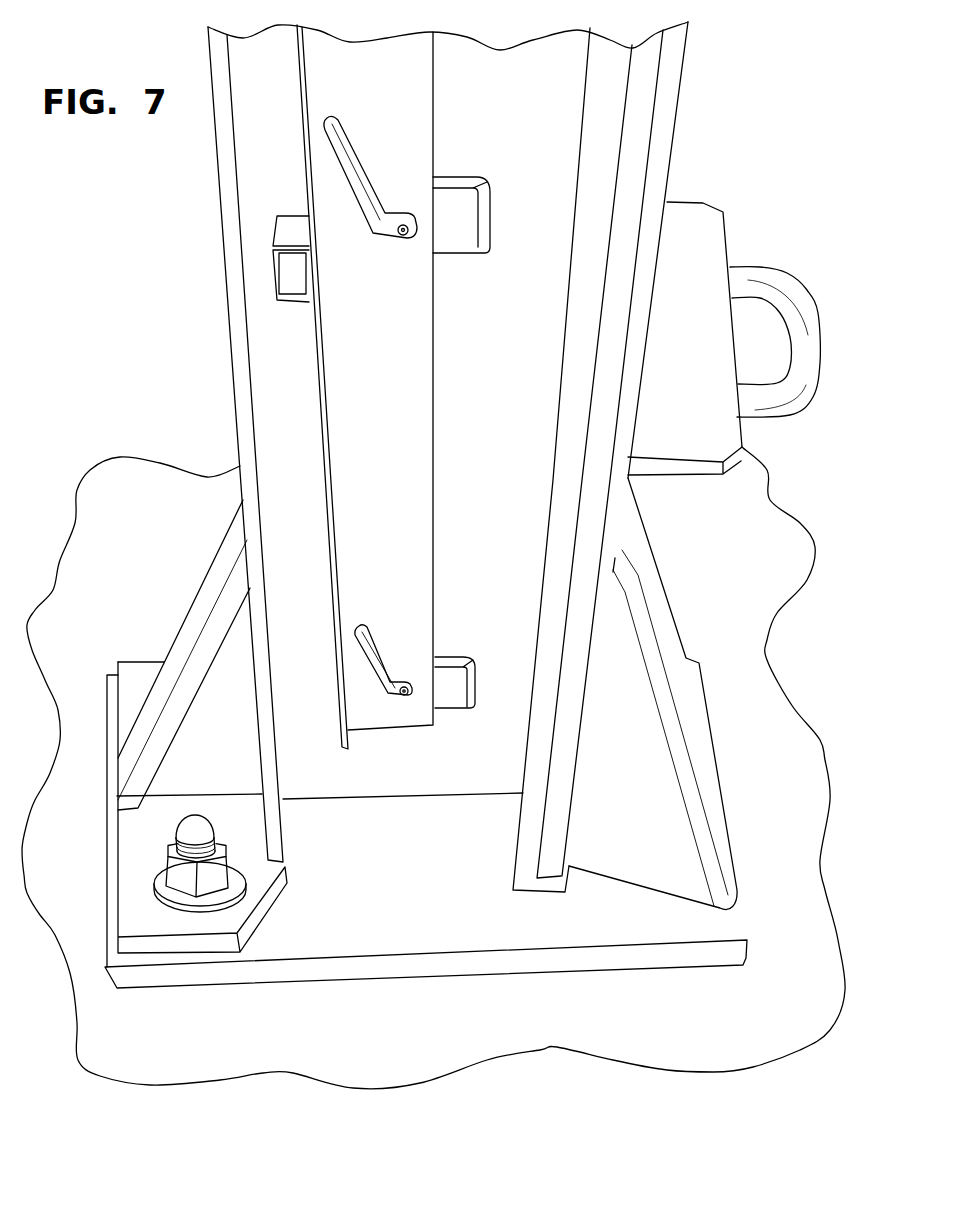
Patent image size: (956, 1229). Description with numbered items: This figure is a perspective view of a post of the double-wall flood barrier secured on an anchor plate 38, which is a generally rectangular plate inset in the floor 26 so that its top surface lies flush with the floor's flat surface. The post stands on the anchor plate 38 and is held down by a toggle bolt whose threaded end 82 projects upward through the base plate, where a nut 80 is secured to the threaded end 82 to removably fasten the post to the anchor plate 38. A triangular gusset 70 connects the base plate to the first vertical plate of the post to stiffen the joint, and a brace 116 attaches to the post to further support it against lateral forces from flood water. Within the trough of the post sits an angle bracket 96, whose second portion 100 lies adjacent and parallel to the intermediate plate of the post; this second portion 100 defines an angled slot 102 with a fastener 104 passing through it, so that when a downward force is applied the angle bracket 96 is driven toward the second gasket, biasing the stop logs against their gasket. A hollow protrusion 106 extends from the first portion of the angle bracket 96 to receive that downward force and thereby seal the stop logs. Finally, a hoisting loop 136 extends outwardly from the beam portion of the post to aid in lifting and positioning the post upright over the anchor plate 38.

The floor 26 is at (766, 1029).
The anchor plate 38 is at (393, 858).
The gusset 70 is at (180, 648).
The nut 80 is at (173, 877).
The threaded end 82 is at (193, 822).
The angle bracket 96 is at (323, 397).
The second portion 100 is at (393, 517).
The angled slot 102 is at (360, 163).
The fastener 104 is at (403, 240).
The hollow protrusion 106 is at (290, 233).
The brace 116 is at (648, 753).
The hoisting loop 136 is at (797, 333).